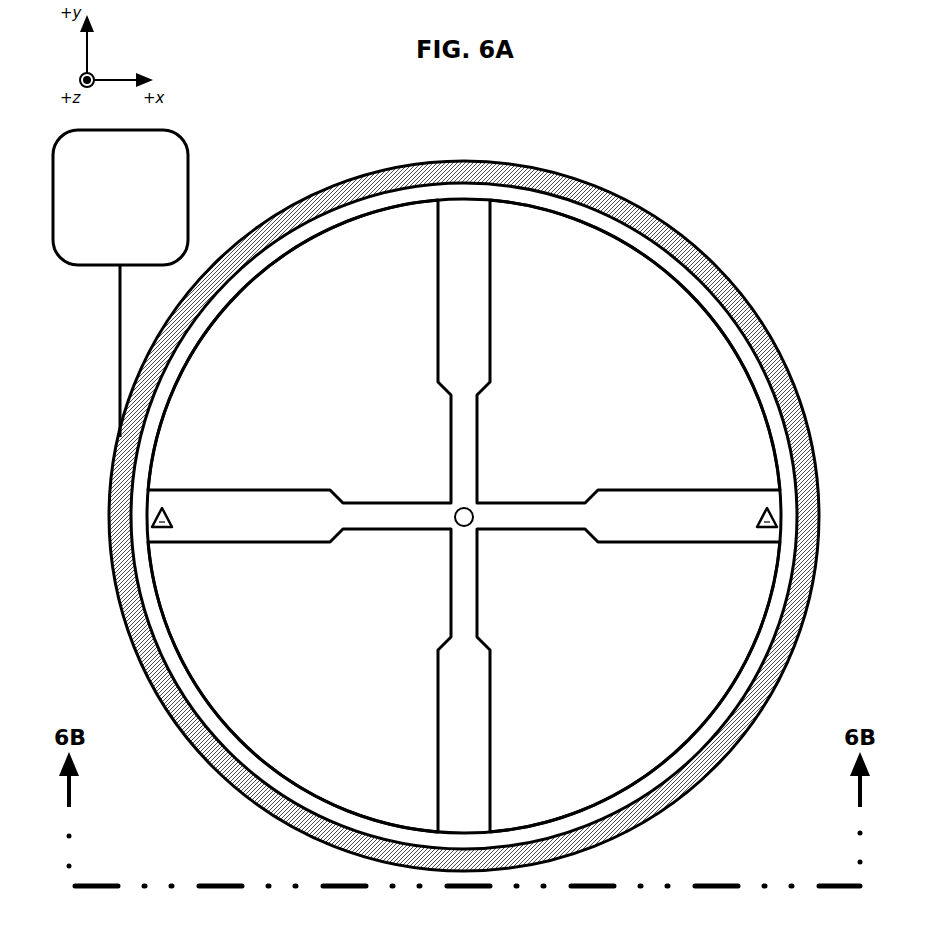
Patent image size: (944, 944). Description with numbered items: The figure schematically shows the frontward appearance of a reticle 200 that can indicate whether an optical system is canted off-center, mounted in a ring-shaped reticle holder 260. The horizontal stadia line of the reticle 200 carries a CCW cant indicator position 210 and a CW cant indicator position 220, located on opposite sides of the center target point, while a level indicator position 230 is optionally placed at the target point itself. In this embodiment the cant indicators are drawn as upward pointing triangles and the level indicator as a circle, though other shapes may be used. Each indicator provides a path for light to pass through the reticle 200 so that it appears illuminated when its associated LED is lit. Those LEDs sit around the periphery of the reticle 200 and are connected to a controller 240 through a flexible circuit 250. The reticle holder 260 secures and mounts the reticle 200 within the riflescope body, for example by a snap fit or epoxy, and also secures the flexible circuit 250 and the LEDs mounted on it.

The reticle 200 is at (708, 733).
The CCW cant indicator position 210 is at (170, 518).
The CW cant indicator position 220 is at (762, 509).
The level indicator position 230 is at (457, 524).
The controller 240 is at (120, 197).
The flexible circuit 250 is at (117, 315).
The reticle holder 260 is at (698, 253).